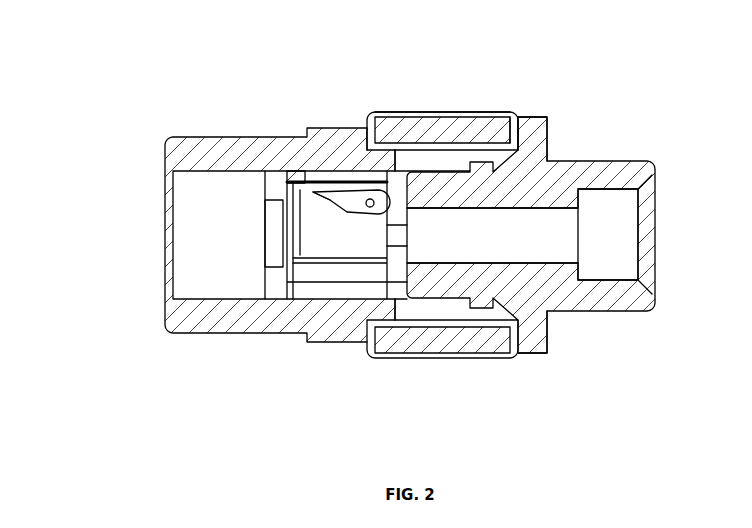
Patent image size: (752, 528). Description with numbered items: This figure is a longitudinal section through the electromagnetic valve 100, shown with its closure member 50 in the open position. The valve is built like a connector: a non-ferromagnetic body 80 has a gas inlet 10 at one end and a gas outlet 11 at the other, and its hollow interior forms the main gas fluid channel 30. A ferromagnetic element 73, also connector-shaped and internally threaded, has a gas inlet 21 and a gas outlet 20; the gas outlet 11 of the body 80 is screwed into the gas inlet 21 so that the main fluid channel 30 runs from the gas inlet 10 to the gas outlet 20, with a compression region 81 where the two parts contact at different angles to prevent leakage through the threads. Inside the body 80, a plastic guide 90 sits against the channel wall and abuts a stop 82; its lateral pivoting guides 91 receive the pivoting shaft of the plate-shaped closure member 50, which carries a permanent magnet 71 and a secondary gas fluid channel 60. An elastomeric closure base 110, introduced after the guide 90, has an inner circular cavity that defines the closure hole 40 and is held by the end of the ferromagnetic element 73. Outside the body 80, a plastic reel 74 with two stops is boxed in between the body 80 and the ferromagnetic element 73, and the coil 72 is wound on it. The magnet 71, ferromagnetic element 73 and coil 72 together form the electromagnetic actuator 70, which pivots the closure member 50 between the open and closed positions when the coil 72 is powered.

The electromagnetic valve 100 is at (158, 139).
The body 80 is at (251, 156).
The permanent magnet 71 is at (332, 198).
The reel 74 is at (376, 133).
The lateral pivoting guides 91 is at (389, 179).
The coil 72 is at (458, 126).
The electromagnetic actuator 70 is at (490, 104).
The compression region 81 is at (521, 145).
The ferromagnetic element 73 is at (614, 164).
The stop 82 is at (265, 183).
The gas inlet 10 is at (200, 248).
The gas outlet 20 is at (611, 247).
The secondary gas fluid channel 60 is at (344, 208).
The closure member 50 is at (330, 199).
The guide 90 is at (324, 299).
The main gas fluid channel 30 is at (365, 236).
The closure base 110 is at (397, 294).
The closure hole 40 is at (398, 241).
The gas inlet 21 is at (428, 246).
The gas outlet 11 is at (495, 246).